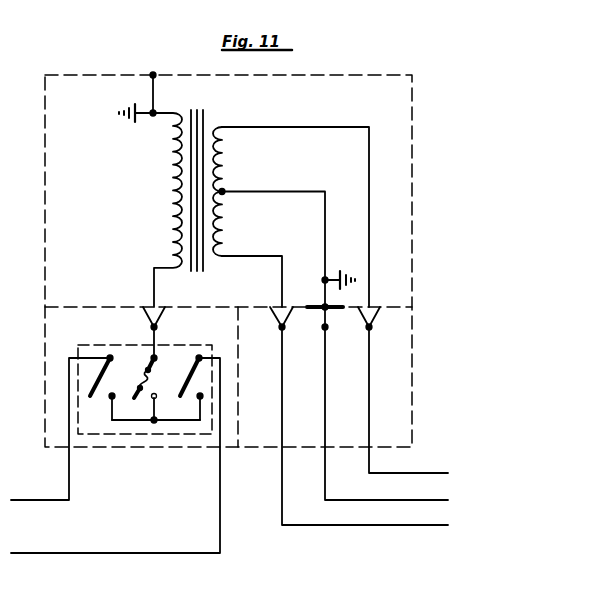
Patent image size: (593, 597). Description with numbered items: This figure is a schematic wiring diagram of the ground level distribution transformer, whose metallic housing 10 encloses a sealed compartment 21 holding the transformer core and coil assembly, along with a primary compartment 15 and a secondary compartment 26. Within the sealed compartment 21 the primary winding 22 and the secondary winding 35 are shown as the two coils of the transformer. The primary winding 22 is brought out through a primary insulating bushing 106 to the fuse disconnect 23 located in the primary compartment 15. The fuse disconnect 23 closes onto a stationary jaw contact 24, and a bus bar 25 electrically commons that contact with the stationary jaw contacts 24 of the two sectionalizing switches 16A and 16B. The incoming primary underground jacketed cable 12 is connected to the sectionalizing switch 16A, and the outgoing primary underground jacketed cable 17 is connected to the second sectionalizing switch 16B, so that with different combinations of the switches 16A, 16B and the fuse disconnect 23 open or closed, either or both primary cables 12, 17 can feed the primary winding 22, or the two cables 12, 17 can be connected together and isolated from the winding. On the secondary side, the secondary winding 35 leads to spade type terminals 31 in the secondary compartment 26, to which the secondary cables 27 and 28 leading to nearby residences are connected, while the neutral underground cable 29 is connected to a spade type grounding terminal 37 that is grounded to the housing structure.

The metallic housing 10 is at (407, 66).
The sealed compartment 21 is at (72, 200).
The primary winding 22 is at (175, 191).
The secondary winding 35 is at (218, 160).
The primary insulating bushing 106 is at (153, 326).
The fuse disconnect 23 is at (158, 372).
The sectionalizing switch 16A is at (117, 372).
The second sectionalizing switch 16B is at (187, 372).
The stationary jaw contact 24 is at (111, 397).
The primary compartment 15 is at (145, 432).
The bus bar 25 is at (126, 422).
The incoming primary underground jacketed cable 12 is at (68, 473).
The outgoing primary underground jacketed cable 17 is at (220, 481).
The spade type terminals 31 is at (281, 329).
The spade type grounding terminal 37 is at (324, 329).
The secondary compartment 26 is at (263, 421).
The secondary cable 27 is at (282, 499).
The neutral underground cable 29 is at (326, 463).
The secondary cable 28 is at (370, 463).